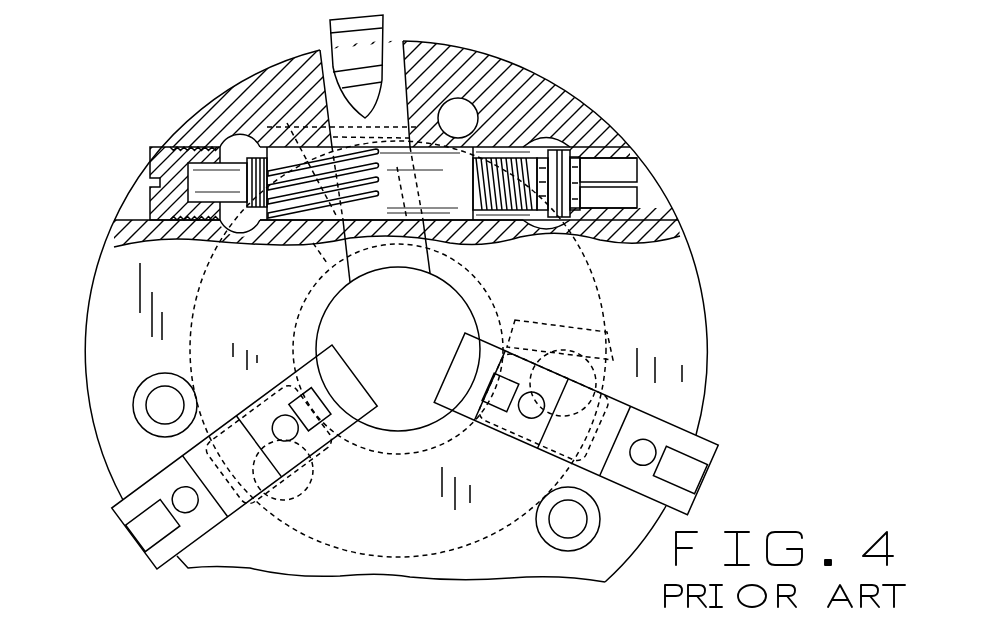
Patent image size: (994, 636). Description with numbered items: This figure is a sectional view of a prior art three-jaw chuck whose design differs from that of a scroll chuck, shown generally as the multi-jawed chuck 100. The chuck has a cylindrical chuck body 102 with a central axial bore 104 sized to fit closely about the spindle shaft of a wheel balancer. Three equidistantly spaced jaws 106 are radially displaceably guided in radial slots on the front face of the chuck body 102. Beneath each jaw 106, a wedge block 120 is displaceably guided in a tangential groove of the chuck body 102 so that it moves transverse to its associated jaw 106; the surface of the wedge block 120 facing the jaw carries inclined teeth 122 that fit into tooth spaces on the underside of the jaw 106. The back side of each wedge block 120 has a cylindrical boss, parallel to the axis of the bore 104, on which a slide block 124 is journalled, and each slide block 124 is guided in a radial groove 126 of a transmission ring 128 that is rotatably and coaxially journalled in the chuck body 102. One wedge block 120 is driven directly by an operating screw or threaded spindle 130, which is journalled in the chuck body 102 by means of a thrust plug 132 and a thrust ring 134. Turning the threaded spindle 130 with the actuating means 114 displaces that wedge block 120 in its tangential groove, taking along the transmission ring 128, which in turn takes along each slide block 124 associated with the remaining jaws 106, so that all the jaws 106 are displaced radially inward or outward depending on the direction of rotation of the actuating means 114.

The multi-jawed chuck 100 is at (707, 258).
The chuck body 102 is at (100, 436).
The axial bore 104 is at (398, 349).
The jaws 106 is at (393, 83).
The actuating means 114 is at (637, 173).
The wedge block 120 is at (398, 349).
The inclined teeth 122 is at (300, 157).
The slide block 124 is at (313, 245).
The radial groove 126 is at (328, 262).
The transmission ring 128 is at (565, 305).
The threaded spindle 130 is at (541, 153).
The thrust plug 132 is at (160, 150).
The thrust ring 134 is at (580, 147).